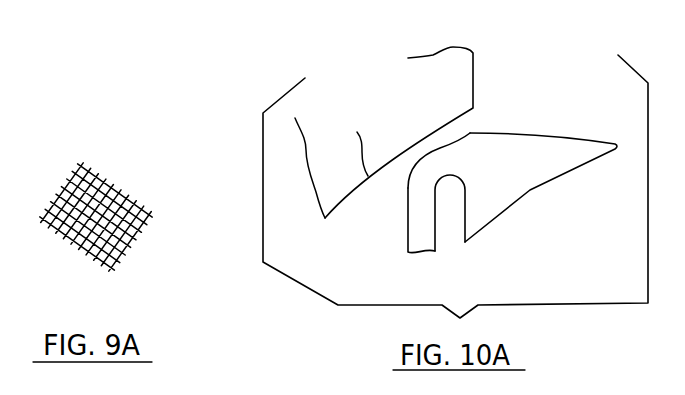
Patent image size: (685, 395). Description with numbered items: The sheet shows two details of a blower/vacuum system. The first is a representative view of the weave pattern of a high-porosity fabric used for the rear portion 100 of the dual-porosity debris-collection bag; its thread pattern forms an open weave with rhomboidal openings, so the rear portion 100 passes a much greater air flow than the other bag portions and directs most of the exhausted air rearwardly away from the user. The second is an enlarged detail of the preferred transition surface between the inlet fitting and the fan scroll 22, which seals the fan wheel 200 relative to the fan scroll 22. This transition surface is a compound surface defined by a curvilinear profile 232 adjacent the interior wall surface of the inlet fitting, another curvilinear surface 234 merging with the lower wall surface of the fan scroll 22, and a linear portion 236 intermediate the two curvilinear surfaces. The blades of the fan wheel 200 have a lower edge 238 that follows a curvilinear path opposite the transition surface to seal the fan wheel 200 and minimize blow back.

In FIG. 9A, the rear portion 100 is at (139, 169).
In FIG. 10A, the fan wheel 200 is at (453, 106).
In FIG. 10A, the lower edge 238 is at (331, 168).
In FIG. 10A, the curvilinear profile 232 is at (405, 176).
In FIG. 10A, the linear portion 236 is at (450, 147).
In FIG. 10A, the curvilinear surface 234 is at (474, 128).
In FIG. 10A, the fan scroll 22 is at (503, 205).